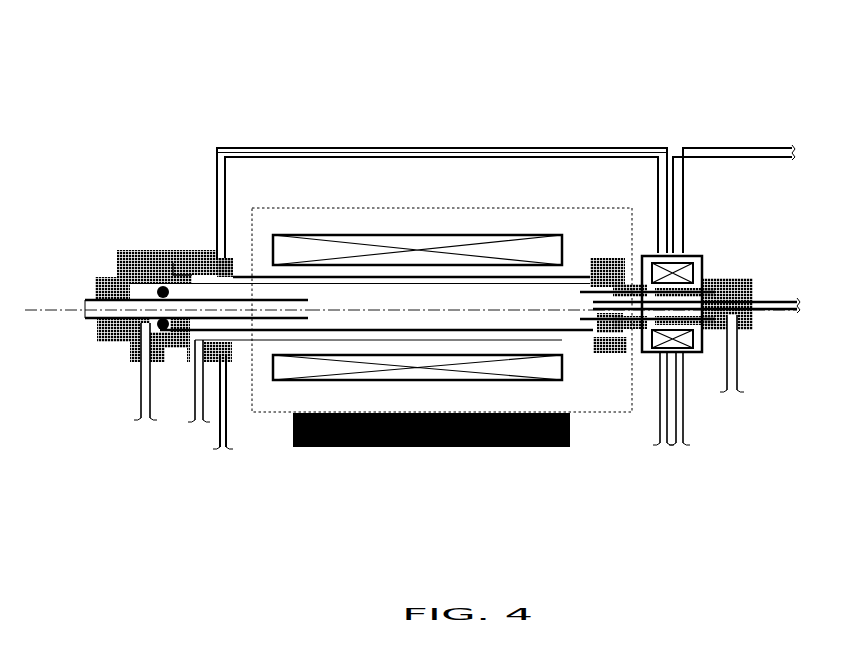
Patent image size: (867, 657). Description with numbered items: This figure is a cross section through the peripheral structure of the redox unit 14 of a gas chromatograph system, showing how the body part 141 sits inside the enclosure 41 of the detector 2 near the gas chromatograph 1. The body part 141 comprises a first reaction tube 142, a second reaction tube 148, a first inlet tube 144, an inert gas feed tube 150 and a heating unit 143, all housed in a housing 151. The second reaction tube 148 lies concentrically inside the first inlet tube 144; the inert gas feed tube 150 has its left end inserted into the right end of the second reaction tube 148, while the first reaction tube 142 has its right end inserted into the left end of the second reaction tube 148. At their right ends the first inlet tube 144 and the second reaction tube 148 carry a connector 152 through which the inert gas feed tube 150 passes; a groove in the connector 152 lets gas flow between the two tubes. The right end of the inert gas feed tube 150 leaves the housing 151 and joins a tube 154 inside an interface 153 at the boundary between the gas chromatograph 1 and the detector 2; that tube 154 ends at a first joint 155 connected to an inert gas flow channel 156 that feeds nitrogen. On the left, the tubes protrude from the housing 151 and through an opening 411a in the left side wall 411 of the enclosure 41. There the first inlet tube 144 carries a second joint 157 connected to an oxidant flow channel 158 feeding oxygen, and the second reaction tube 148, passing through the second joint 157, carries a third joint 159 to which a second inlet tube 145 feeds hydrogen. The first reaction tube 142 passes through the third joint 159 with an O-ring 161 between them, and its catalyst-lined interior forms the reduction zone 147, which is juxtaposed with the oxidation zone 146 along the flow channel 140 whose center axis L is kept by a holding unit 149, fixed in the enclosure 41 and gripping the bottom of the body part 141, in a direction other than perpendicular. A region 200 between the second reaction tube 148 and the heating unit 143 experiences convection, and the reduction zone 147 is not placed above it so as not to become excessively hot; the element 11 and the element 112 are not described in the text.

The gas chromatograph 1 is at (758, 127).
The detector 2 is at (428, 127).
The output shaft 11 is at (775, 298).
The redox unit 14 is at (572, 262).
The enclosure 41 is at (300, 147).
The left side wall 411 is at (213, 163).
The opening 411a is at (233, 357).
The spacer 112 is at (560, 330).
The flow channel 140 is at (440, 310).
The body part 141 is at (347, 205).
The first reaction tube 142 is at (88, 300).
The heating unit 143 is at (457, 233).
The first inlet tube 144 is at (562, 312).
The second inlet tube 145 is at (140, 387).
The oxidation zone 146 is at (535, 310).
The reduction zone 147 is at (297, 306).
The second reaction tube 148 is at (260, 333).
The holding unit 149 is at (333, 448).
The inert gas feed tube 150 is at (613, 188).
The housing 151 is at (523, 207).
The connector 152 is at (590, 290).
The interface 153 is at (688, 242).
The tube 154 is at (700, 352).
The first joint 155 is at (735, 278).
The inert gas flow channel 156 is at (743, 367).
The second joint 157 is at (197, 250).
The oxidant flow channel 158 is at (198, 398).
The third joint 159 is at (138, 250).
The O-ring 161 is at (155, 362).
The region 200 is at (290, 270).
The center axis L is at (47, 307).